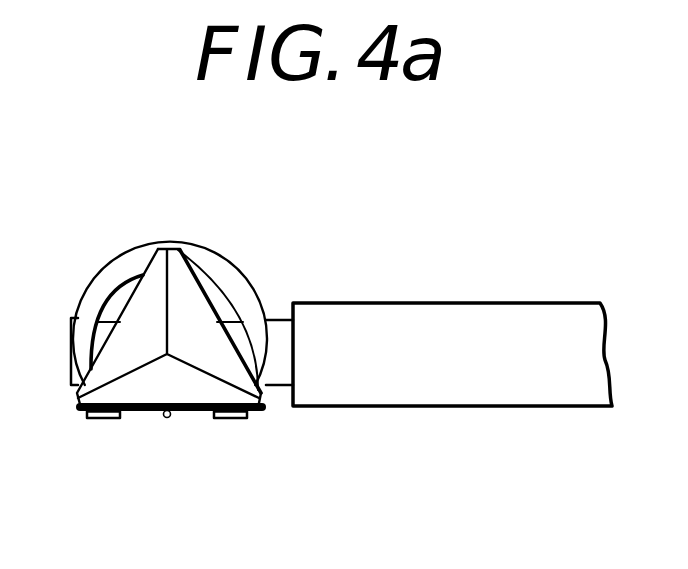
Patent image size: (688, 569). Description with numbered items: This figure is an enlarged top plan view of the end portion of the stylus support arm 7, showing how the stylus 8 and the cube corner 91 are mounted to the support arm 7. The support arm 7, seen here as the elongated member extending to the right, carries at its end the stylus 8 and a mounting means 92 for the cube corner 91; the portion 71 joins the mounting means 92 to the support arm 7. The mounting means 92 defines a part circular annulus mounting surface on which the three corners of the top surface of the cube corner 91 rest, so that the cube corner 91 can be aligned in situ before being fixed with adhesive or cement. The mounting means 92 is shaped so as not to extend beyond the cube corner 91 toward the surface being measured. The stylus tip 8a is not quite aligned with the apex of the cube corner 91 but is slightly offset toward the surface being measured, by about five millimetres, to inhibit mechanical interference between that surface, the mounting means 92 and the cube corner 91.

The mounting means 92 is at (107, 288).
The cube corner 91 is at (196, 304).
The connecting piece 71 is at (280, 340).
The stylus support arm 7 is at (447, 340).
The stylus 8 is at (165, 415).
The stylus tip 8a is at (168, 415).